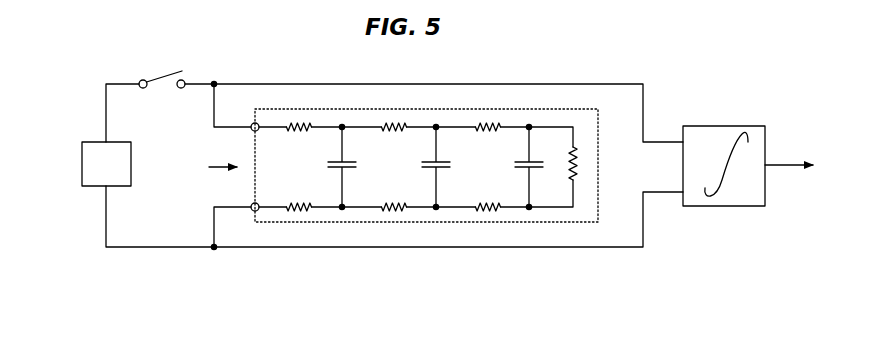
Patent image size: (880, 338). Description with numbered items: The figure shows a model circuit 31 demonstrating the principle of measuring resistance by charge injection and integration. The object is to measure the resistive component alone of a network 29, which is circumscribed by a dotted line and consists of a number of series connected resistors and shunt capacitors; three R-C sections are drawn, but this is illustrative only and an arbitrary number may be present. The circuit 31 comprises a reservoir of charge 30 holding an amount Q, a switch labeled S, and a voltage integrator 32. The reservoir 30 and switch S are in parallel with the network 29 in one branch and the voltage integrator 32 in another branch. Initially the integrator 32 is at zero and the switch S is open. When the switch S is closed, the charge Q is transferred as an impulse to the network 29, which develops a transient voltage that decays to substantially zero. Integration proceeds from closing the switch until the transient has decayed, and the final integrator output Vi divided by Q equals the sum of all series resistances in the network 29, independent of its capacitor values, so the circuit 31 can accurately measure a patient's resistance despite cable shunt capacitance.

The network 29 is at (336, 222).
The reservoir of charge 30 is at (97, 187).
The circuit 31 is at (715, 285).
The voltage integrator 32 is at (753, 122).